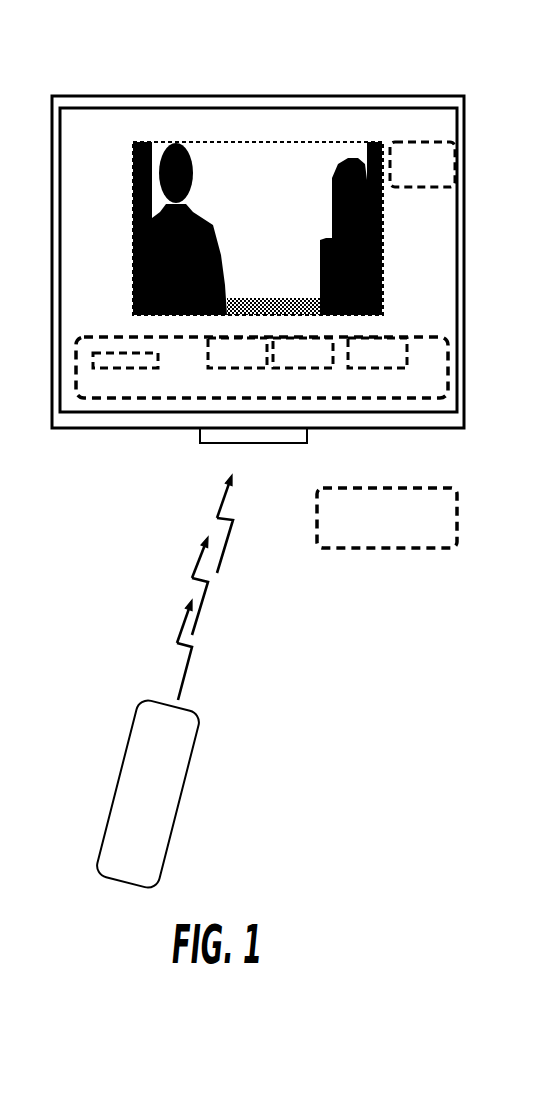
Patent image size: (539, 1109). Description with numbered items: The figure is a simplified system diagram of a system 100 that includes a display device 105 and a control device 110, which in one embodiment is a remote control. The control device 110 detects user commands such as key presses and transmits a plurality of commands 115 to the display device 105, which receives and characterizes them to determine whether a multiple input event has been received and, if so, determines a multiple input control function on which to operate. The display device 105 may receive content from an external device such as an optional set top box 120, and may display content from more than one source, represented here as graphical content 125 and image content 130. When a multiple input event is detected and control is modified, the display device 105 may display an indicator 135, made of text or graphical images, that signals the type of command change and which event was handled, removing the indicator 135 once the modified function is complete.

The system 100 is at (80, 64).
The display device 105 is at (378, 96).
The control device 110 is at (148, 692).
The plurality of commands 115 is at (180, 560).
The set top box 120 is at (450, 490).
The graphical content 125 is at (116, 328).
The image content 130 is at (108, 178).
The indicator 135 is at (457, 167).